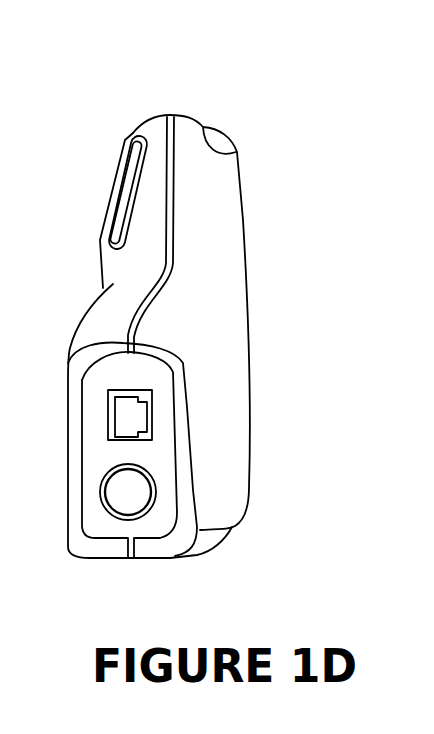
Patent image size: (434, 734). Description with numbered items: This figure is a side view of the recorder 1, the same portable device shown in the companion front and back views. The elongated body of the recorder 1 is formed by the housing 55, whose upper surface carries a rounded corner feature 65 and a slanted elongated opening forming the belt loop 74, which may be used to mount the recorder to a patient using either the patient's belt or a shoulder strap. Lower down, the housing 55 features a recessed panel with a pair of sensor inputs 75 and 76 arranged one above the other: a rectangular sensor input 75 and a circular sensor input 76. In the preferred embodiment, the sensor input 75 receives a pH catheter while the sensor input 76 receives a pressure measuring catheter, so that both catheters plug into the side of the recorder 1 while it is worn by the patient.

The recorder 1 is at (273, 115).
The housing 55 is at (190, 316).
The corner feature 65 is at (223, 136).
The belt loop 74 is at (133, 132).
The sensor input 75 is at (130, 425).
The sensor input 76 is at (137, 503).